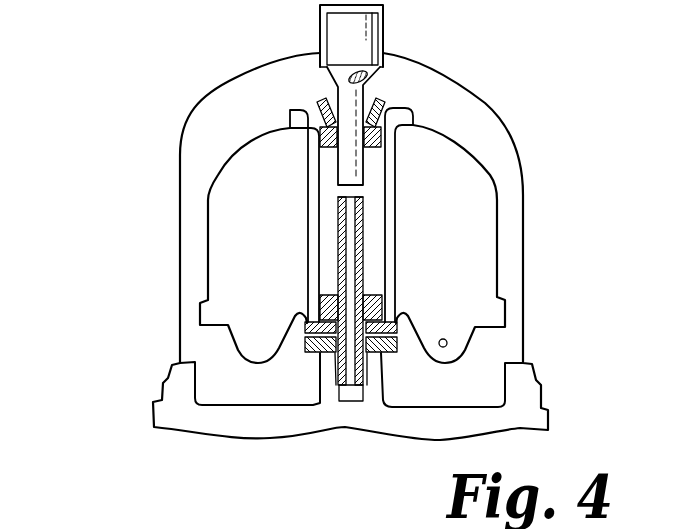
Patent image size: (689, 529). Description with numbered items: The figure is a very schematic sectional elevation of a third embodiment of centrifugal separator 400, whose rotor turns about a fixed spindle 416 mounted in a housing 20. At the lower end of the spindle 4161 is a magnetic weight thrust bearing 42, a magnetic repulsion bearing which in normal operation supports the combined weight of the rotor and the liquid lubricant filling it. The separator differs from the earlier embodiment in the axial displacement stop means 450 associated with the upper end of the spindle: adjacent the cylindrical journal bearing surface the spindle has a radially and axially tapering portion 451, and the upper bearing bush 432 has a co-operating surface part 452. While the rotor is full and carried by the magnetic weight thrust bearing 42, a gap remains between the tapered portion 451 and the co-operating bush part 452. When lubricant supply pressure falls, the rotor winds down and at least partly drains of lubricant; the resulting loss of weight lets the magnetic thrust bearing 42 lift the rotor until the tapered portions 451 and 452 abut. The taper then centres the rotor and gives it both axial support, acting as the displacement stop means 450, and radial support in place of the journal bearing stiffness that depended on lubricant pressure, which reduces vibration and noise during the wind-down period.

The centrifugal separator 400 is at (150, 147).
The housing body 20 is at (503, 205).
The magnetic weight thrust bearing 42 is at (292, 362).
The fixed spindle 416 is at (340, 250).
The fixed spindle 4161 is at (350, 43).
The radially and axially tapering portion 451 is at (378, 76).
The axial displacement stop means 450 is at (315, 92).
The upper bearing bush 432 is at (320, 138).
The co-operating surface part 452 is at (386, 103).